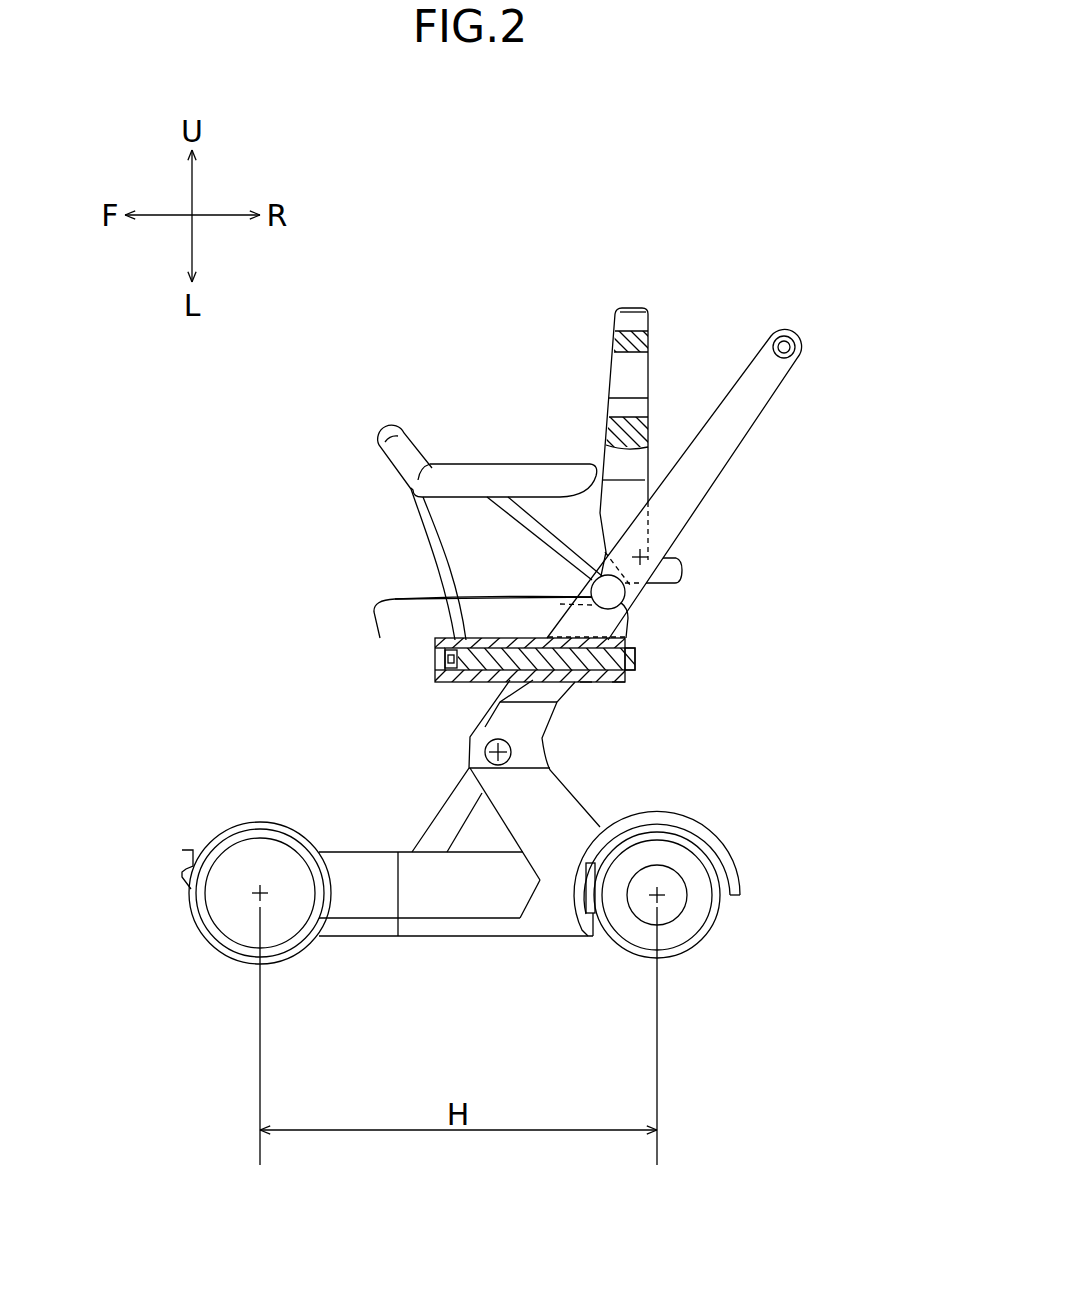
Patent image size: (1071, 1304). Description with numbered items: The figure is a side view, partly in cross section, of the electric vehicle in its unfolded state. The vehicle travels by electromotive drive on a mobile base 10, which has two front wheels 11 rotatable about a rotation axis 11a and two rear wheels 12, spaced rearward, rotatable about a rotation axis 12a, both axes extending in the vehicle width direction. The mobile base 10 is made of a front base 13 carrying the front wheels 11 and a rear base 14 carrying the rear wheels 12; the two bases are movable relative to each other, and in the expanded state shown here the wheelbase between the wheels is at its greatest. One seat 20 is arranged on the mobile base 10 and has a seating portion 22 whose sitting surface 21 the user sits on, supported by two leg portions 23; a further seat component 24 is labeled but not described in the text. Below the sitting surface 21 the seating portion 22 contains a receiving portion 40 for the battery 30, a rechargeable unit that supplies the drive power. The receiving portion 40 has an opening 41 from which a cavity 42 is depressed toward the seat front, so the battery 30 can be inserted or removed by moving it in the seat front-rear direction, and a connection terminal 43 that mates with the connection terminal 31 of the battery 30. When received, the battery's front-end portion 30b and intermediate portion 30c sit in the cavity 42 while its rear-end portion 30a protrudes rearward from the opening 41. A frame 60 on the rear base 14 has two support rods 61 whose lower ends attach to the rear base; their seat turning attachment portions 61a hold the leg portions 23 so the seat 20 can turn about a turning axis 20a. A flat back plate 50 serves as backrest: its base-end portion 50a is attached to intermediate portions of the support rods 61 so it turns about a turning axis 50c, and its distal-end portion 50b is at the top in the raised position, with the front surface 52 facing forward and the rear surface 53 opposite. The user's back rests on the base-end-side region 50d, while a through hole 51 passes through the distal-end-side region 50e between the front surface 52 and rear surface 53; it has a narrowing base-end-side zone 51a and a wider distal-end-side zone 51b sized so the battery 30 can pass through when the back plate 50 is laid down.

The mobile base 10 is at (676, 810).
The front wheels 11 is at (217, 938).
The rotation axis 11a is at (253, 893).
The rear wheels 12 is at (703, 937).
The rotation axis 12a is at (660, 893).
The front base 13 is at (207, 838).
The rear base 14 is at (716, 837).
The seat 20 is at (497, 559).
The turning axis 20a is at (485, 752).
The sitting surface 21 is at (440, 598).
The seating portion 22 is at (393, 620).
The leg portions 23 is at (445, 813).
The seat rear portion 24 is at (632, 612).
The battery 30 is at (552, 552).
The rear-end portion 30a is at (626, 678).
The front-end portion 30b is at (440, 560).
The intermediate portion 30c is at (522, 650).
The connection terminal 31 is at (432, 585).
The receiving portion 40 is at (436, 670).
The opening 41 is at (620, 684).
The cavity 42 is at (587, 683).
The connection terminal 43 is at (445, 658).
The back plate 50 is at (687, 393).
The base-end portion 50a is at (727, 568).
The distal-end portion 50b is at (649, 304).
The turning axis 50c is at (646, 556).
The base-end-side region 50d is at (650, 453).
The distal-end-side region 50e is at (650, 340).
The through hole 51 is at (614, 357).
The base-end-side zone 51a is at (637, 408).
The distal-end-side zone 51b is at (637, 376).
The front surface 52 is at (603, 410).
The rear surface 53 is at (625, 480).
The frame 60 is at (712, 484).
The support rods 61 is at (518, 803).
The seat turning attachment portions 61a is at (470, 737).